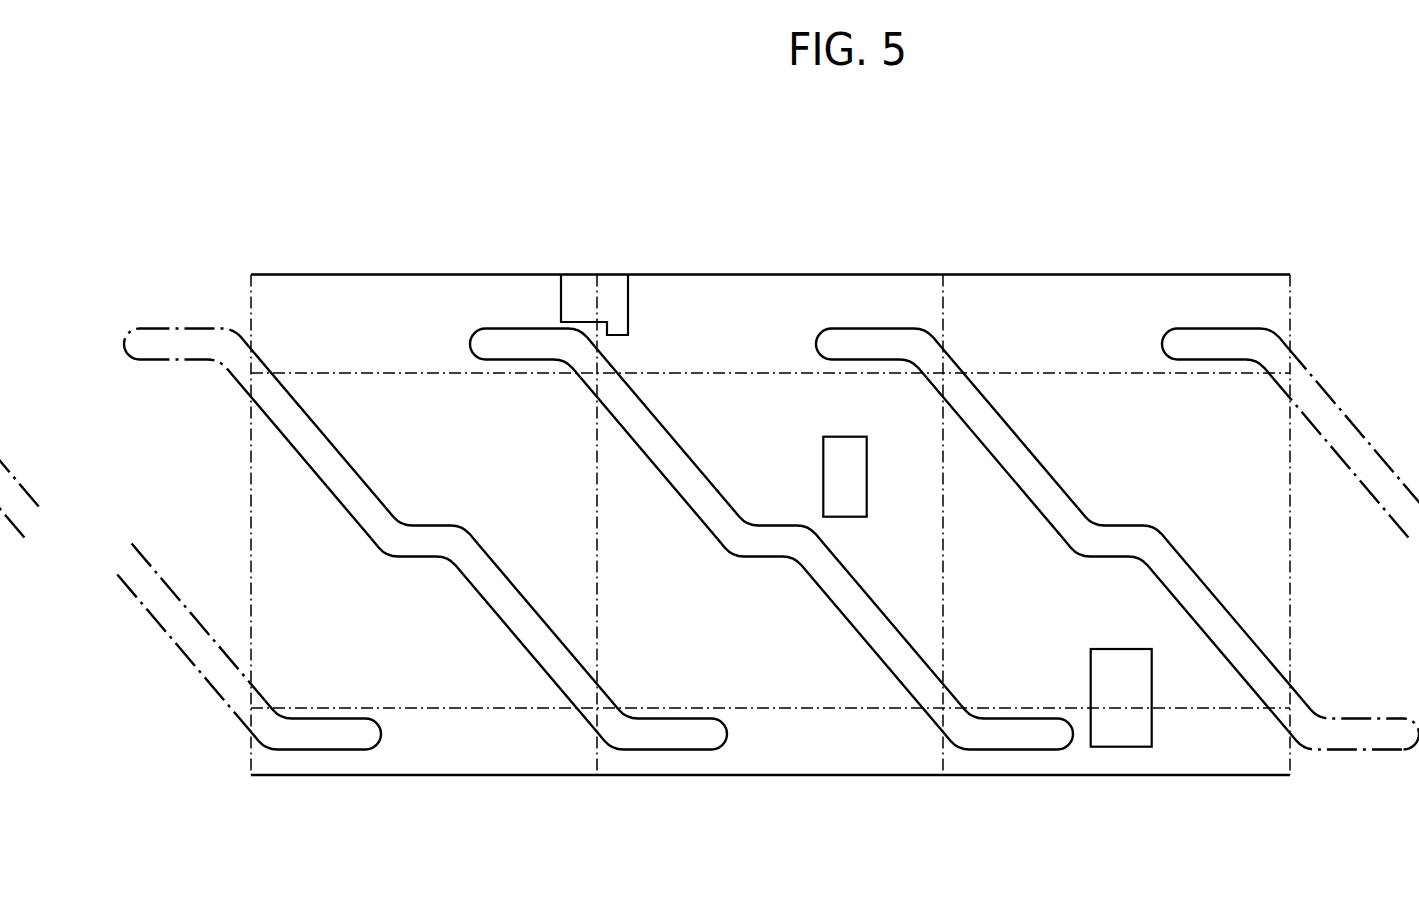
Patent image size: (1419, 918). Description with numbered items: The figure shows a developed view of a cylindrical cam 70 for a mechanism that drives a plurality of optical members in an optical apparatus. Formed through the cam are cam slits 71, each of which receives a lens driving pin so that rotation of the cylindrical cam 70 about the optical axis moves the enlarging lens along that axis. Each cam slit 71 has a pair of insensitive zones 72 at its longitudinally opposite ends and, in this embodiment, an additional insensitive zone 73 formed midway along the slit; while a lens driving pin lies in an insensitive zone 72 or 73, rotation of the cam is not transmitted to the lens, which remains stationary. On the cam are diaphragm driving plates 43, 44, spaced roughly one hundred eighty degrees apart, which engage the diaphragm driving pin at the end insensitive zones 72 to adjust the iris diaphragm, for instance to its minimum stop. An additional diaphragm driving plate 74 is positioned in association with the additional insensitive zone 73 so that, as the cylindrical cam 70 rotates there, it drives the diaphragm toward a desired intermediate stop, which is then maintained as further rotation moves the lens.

The diaphragm driving plate 43 is at (583, 285).
The diaphragm driving plate 44 is at (1118, 728).
The cylindrical cam 70 is at (723, 285).
The cam slit 71 is at (362, 490).
The insensitive zone 72 is at (483, 337).
The additional insensitive zone 73 is at (423, 533).
The additional diaphragm driving plate 74 is at (855, 498).